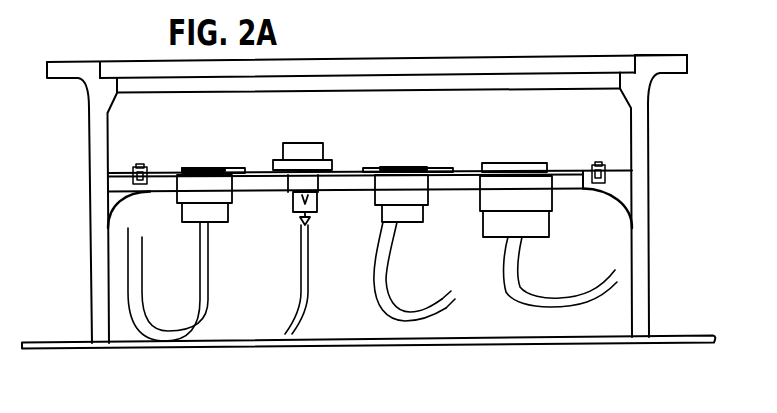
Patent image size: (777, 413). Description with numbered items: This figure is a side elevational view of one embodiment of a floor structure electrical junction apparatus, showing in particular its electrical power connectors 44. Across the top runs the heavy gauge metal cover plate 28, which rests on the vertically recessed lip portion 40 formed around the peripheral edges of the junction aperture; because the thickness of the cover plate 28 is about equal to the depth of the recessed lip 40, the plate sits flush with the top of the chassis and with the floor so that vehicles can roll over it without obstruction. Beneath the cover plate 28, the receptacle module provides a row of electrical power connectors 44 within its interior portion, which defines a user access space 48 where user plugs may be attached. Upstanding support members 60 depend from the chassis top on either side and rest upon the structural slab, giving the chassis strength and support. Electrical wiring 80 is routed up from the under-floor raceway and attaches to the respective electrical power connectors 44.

The cover plate 28 is at (509, 59).
The recessed lip portion 40 is at (631, 79).
The electrical power connectors 44 is at (493, 163).
The user access space 48 is at (584, 132).
The support members 60 is at (100, 187).
The wiring 80 is at (293, 300).